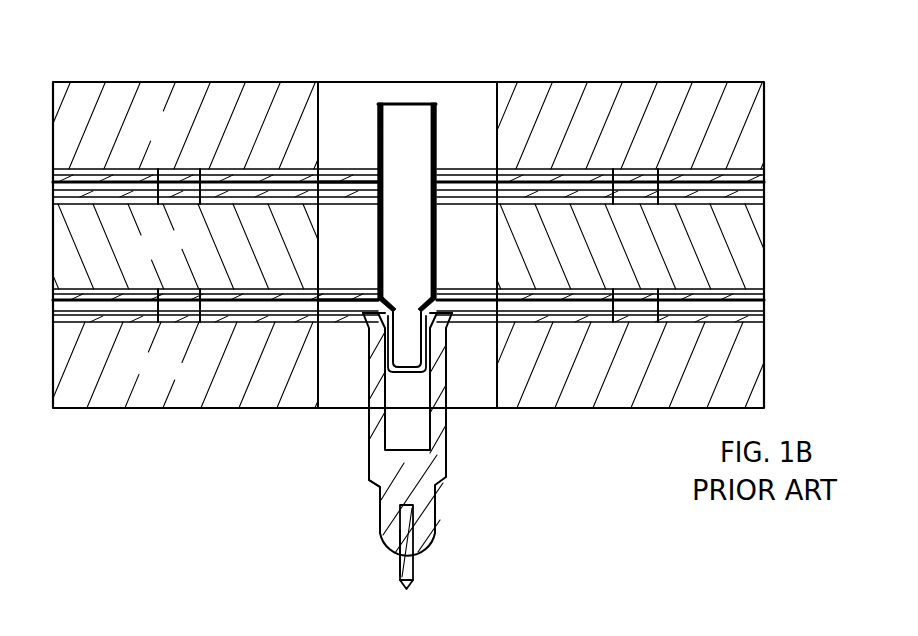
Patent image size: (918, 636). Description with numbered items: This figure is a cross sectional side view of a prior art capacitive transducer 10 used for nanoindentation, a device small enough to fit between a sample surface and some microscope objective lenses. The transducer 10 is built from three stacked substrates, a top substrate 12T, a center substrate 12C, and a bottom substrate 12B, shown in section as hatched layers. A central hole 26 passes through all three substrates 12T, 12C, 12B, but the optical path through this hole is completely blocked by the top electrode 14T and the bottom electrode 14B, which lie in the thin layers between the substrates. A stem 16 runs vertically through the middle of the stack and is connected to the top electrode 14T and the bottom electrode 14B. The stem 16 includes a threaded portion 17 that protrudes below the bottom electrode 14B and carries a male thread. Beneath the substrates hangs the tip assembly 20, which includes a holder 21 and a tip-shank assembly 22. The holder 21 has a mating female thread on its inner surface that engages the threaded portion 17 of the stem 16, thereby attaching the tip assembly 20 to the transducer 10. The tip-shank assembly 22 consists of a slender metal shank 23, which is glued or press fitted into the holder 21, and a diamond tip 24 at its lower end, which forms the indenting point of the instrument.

The capacitive transducer 10 is at (772, 66).
The top substrate 12T is at (169, 138).
The center substrate 12C is at (178, 255).
The bottom substrate 12B is at (177, 375).
The top electrode 14T is at (360, 185).
The bottom electrode 14B is at (340, 305).
The stem 16 is at (377, 109).
The threaded portion 17 is at (430, 362).
The tip assembly 20 is at (455, 499).
The holder 21 is at (373, 490).
The tip-shank assembly 22 is at (428, 573).
The metal shank 23 is at (402, 570).
The diamond tip 24 is at (406, 591).
The central hole 26 is at (496, 102).